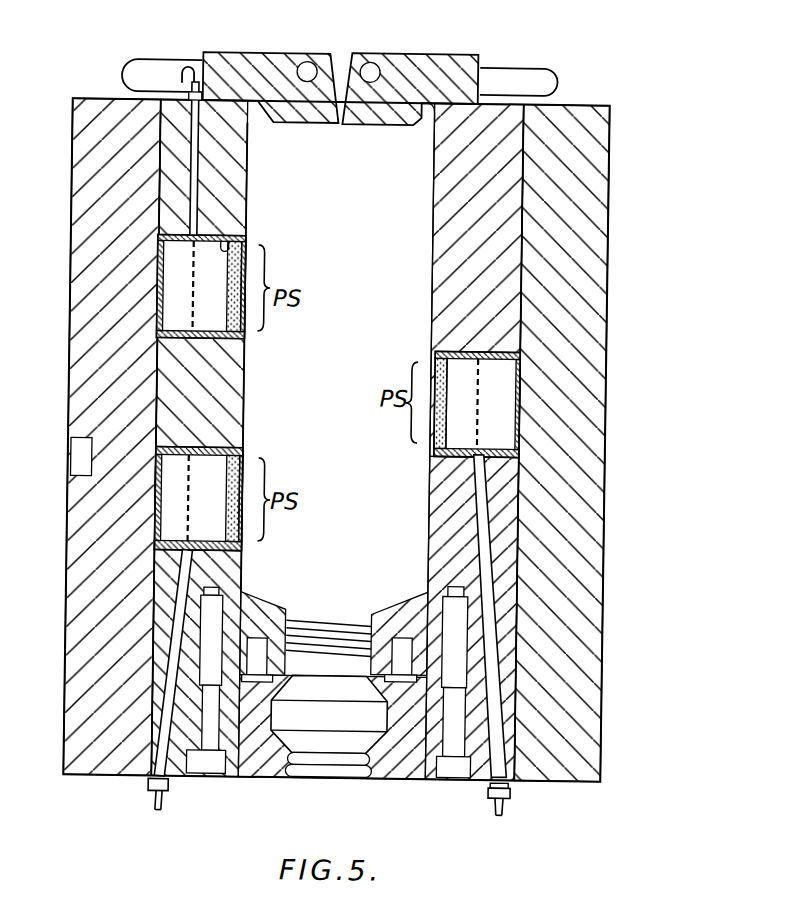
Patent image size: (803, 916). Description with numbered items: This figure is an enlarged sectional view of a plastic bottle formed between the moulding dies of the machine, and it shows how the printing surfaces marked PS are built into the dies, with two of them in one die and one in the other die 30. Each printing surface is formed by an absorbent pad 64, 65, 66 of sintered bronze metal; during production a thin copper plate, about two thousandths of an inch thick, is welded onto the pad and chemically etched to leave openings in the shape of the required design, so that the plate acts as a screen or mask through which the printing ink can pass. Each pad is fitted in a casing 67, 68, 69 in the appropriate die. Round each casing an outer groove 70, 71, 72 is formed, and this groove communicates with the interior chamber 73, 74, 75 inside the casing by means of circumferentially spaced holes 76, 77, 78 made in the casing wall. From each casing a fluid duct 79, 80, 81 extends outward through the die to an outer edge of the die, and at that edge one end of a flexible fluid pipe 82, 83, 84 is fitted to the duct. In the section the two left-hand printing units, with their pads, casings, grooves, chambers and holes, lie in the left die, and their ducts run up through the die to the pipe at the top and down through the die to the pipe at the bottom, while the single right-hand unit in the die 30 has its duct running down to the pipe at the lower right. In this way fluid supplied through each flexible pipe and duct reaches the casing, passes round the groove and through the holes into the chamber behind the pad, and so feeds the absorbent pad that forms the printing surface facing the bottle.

The die 30 is at (435, 318).
The absorbent pad 64 is at (242, 236).
The absorbent pad 65 is at (242, 547).
The absorbent pad 66 is at (433, 447).
The casing 67 is at (153, 331).
The casing 68 is at (161, 525).
The casing 69 is at (519, 392).
The outer groove 70 is at (193, 339).
The outer groove 71 is at (190, 450).
The outer groove 72 is at (477, 351).
The interior chamber 73 is at (183, 292).
The interior chamber 74 is at (184, 503).
The interior chamber 75 is at (477, 361).
The circumferentially spaced holes 76 is at (165, 318).
The circumferentially spaced holes 77 is at (154, 553).
The circumferentially spaced holes 78 is at (507, 430).
The fluid duct 79 is at (187, 186).
The fluid duct 80 is at (180, 645).
The fluid duct 81 is at (488, 523).
The flexible fluid pipe 82 is at (184, 66).
The flexible fluid pipe 83 is at (162, 801).
The flexible fluid pipe 84 is at (506, 800).